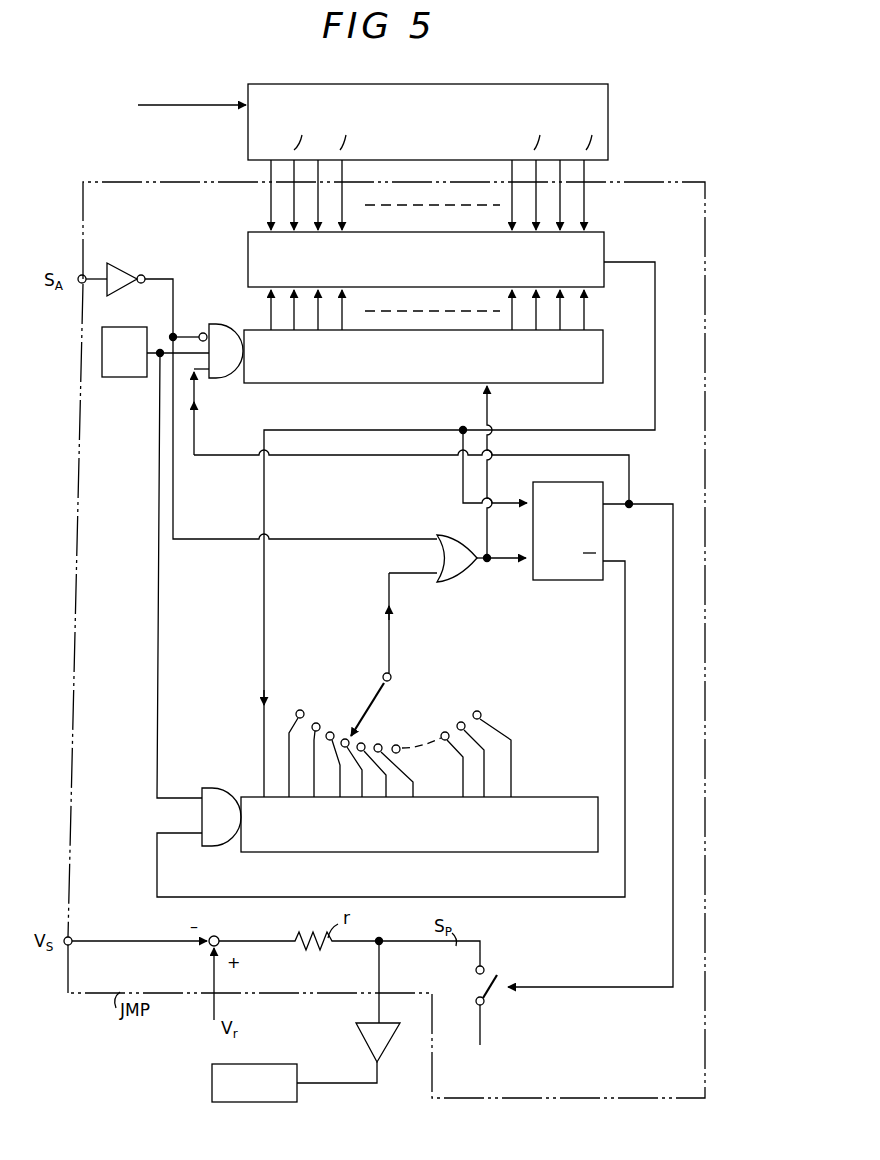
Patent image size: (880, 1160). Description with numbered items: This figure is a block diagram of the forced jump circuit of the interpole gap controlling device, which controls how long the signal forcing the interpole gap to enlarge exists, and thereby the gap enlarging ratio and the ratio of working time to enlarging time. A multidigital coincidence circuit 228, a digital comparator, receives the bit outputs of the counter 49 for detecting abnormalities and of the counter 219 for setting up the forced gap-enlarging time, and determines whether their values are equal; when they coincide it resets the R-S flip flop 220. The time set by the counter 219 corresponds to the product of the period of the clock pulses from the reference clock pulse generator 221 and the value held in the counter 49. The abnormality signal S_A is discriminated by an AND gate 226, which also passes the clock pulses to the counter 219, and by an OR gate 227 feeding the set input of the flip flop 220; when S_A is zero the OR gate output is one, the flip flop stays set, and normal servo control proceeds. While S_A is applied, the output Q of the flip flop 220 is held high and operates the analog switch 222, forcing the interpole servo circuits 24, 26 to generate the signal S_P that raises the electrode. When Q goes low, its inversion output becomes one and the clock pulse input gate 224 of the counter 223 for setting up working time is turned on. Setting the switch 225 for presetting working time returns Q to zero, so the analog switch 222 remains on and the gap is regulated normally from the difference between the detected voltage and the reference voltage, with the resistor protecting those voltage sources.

The counter for detecting abnormalities 49 is at (552, 86).
The multidigital coincidence circuit 228 is at (604, 248).
The counter for setting up time for forcibly enlarging the gap 219 is at (556, 386).
The reference clock pulse generator 221 is at (136, 378).
The AND gate 226 is at (230, 328).
The R-S flip flop 220 is at (604, 514).
The OR gate 227 is at (450, 583).
The switch for presetting working time 225 is at (402, 662).
The counter for setting up working time 223 is at (545, 797).
The clock pulse input gate 224 is at (198, 786).
The analog switch 222 is at (492, 968).
The interpole servo circuit 24 is at (358, 1036).
The interpole servo circuit 26 is at (212, 1078).